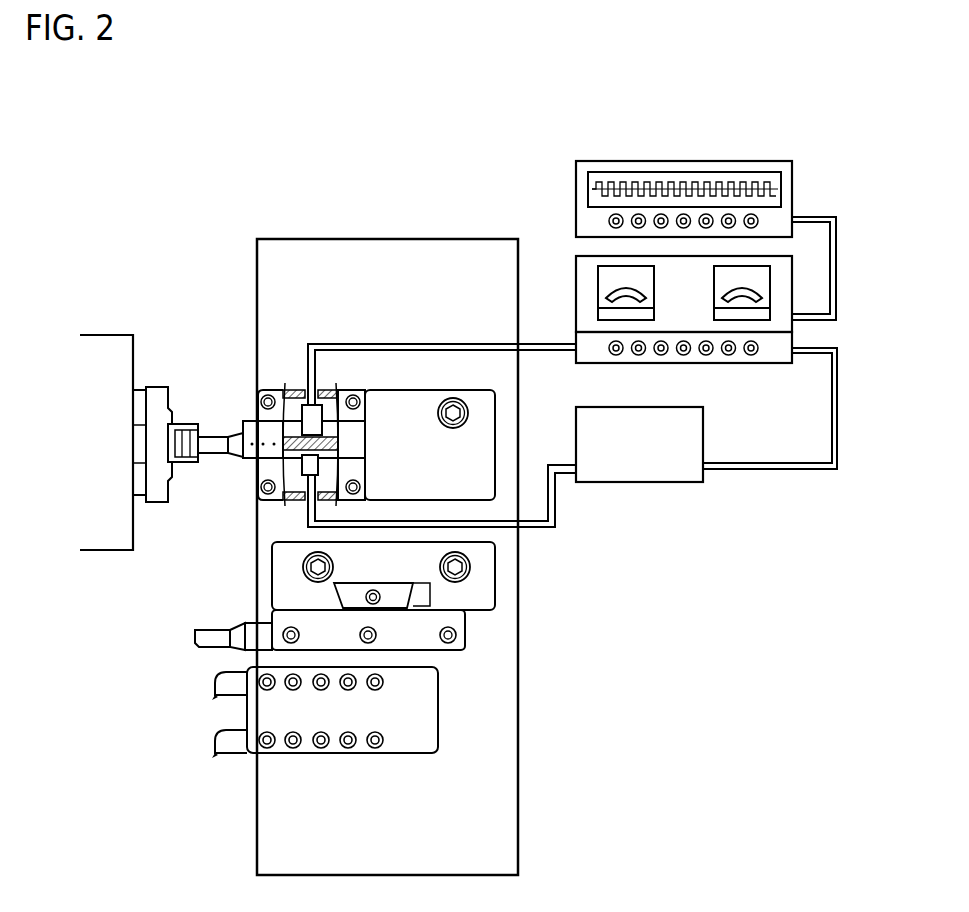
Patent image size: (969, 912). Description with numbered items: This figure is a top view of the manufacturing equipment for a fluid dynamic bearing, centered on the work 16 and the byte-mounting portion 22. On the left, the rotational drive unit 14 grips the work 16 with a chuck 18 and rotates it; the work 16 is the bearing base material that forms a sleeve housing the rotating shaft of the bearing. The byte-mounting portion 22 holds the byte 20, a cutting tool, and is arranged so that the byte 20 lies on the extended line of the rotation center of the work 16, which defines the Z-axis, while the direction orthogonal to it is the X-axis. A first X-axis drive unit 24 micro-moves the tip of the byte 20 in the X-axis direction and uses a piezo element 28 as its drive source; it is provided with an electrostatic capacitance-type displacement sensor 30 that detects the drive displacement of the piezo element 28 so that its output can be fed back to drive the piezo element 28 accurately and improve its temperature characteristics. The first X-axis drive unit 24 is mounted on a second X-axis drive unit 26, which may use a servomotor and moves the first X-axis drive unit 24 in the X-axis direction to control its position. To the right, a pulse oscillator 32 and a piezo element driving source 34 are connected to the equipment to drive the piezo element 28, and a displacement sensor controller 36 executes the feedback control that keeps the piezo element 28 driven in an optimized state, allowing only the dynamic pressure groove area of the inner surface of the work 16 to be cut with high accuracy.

The rotational drive unit 14 is at (97, 445).
The work 16 is at (189, 471).
The chuck 18 is at (155, 494).
The byte 20 is at (224, 425).
The byte-mounting portion 22 is at (427, 398).
The first X-axis drive unit 24 is at (344, 382).
The second X-axis drive unit 26 is at (406, 278).
The piezo element 28 is at (291, 382).
The electrostatic capacitance-type displacement sensor 30 is at (297, 484).
The pulse oscillator 32 is at (725, 168).
The piezo element driving source 34 is at (783, 308).
The displacement sensor controller 36 is at (656, 470).